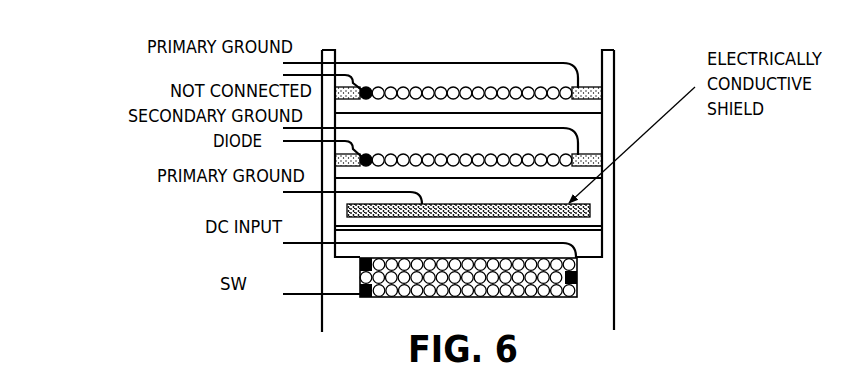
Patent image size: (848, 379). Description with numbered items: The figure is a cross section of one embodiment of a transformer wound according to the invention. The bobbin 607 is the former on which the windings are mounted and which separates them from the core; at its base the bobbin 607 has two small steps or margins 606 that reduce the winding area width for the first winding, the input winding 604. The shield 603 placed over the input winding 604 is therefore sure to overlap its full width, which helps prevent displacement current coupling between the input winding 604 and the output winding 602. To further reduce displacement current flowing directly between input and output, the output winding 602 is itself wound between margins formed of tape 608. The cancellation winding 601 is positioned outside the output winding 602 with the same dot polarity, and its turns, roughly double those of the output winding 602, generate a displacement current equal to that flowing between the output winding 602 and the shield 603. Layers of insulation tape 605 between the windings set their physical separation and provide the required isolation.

The cancellation winding 601 is at (299, 108).
The output winding 602 is at (299, 171).
The shield 603 is at (308, 218).
The input winding 604 is at (302, 287).
The insulation tape 605 is at (629, 229).
The margins 606 is at (589, 270).
The bobbin 607 is at (606, 296).
The tape 608 is at (576, 151).